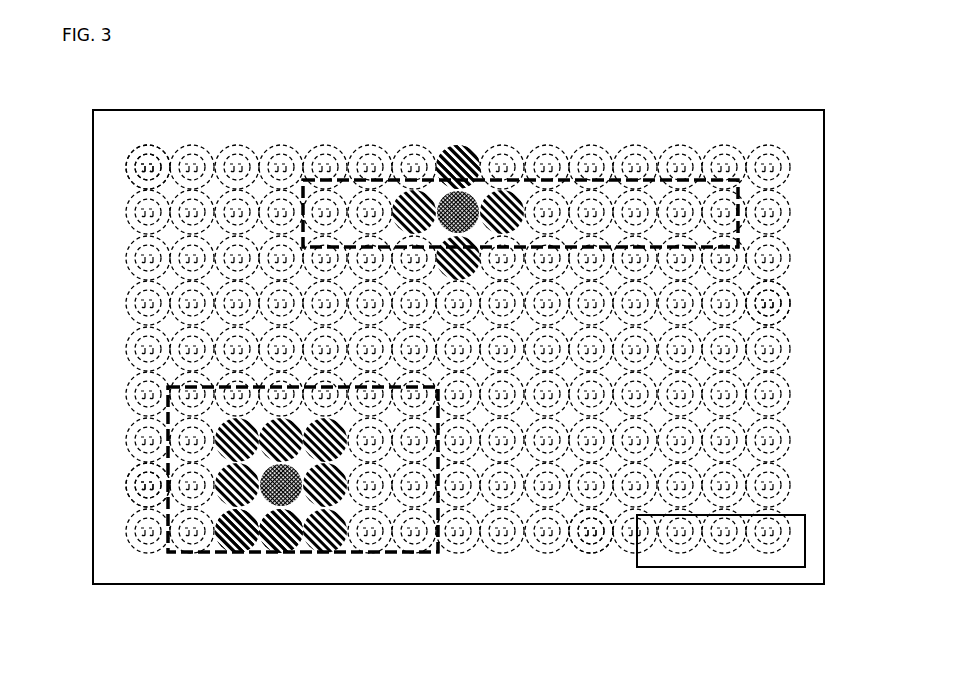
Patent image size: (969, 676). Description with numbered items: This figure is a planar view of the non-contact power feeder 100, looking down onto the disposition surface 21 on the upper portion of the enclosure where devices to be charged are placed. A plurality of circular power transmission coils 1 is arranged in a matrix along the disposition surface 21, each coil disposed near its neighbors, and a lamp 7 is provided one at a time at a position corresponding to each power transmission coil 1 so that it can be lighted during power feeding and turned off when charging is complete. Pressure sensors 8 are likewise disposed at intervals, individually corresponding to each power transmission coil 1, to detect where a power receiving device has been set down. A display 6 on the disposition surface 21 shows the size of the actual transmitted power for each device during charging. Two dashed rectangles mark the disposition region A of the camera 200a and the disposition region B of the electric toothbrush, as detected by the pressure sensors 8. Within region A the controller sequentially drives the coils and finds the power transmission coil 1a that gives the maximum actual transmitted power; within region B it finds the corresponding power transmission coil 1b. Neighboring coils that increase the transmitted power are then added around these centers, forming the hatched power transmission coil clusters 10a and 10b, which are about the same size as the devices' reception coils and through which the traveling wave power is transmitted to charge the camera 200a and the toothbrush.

The non-contact power feeder 100 is at (842, 122).
The disposition surface 21 is at (755, 135).
The display 6 is at (750, 557).
The power transmission coil 1 is at (322, 148).
The lamp 7 is at (131, 148).
The pressure sensor 8 is at (170, 150).
The power transmission coil cluster 10a is at (299, 553).
The power transmission coil cluster 10b is at (433, 147).
The power transmission coil 1a is at (256, 553).
The power transmission coil 1b is at (485, 146).
The camera 200a is at (650, 180).
The disposition region A is at (396, 553).
The disposition region B is at (738, 234).